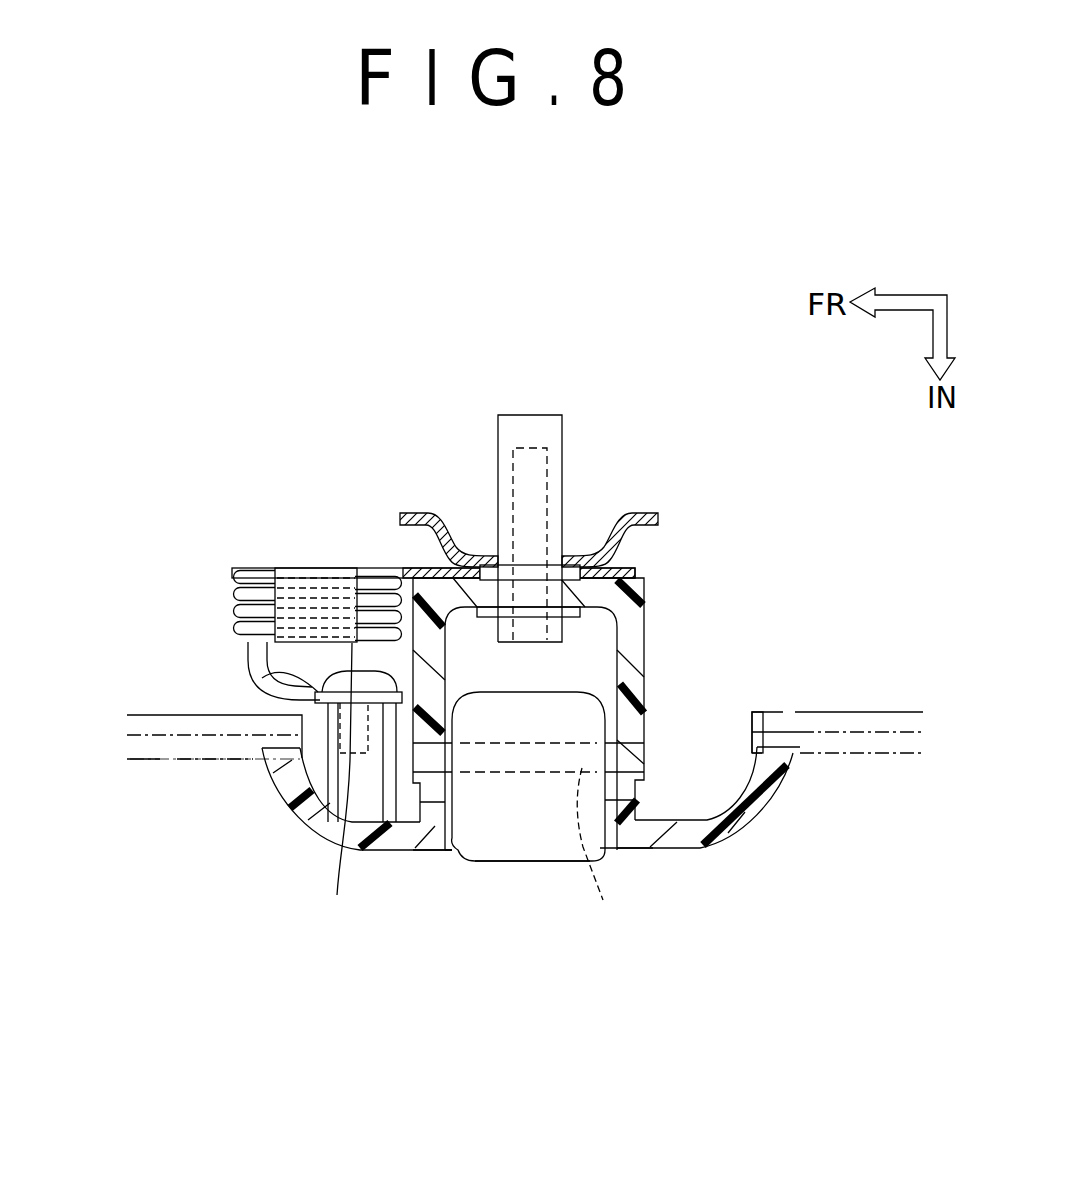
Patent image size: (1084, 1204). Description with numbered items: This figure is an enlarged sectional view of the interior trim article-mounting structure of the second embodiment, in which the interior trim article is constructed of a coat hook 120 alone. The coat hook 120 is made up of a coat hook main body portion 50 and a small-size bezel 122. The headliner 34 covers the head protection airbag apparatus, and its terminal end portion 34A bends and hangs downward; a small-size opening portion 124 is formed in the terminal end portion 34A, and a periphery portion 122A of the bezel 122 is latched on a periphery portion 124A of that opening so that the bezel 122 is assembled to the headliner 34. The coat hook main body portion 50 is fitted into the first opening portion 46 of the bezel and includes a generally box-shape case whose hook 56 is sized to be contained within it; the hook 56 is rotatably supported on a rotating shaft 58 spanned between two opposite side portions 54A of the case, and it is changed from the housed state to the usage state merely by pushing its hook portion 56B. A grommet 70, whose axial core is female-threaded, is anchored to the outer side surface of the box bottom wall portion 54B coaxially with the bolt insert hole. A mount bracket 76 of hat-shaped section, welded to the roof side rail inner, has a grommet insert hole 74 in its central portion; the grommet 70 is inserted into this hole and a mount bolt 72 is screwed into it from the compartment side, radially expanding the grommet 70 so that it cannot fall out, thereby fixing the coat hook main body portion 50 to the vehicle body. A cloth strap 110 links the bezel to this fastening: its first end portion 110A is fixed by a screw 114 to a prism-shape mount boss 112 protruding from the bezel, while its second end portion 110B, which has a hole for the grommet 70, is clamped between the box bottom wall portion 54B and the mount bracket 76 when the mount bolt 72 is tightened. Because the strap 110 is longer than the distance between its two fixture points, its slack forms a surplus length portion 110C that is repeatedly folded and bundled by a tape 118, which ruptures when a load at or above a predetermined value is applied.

The headliner 34 is at (165, 762).
The terminal end portion of the headliner 34A is at (198, 762).
The first opening portion 46 is at (463, 865).
The coat hook main body portion 50 is at (527, 878).
The side portions of the case 54A is at (640, 632).
The box bottom wall portion 54B is at (600, 553).
The hook 56 is at (571, 860).
The hook portion 56B is at (553, 842).
The rotating shaft 58 is at (600, 856).
The grommet 70 is at (532, 415).
The mount bolt 72 is at (532, 640).
The grommet insert hole 74 is at (512, 560).
The mount bracket 76 is at (420, 512).
The strap 110 is at (221, 554).
The first end portion of the strap 110A is at (342, 788).
The second end portion of the strap 110B is at (633, 565).
The surplus length portion 110C is at (230, 602).
The mount boss 112 is at (312, 822).
The screw 114 is at (248, 674).
The tape 118 is at (316, 556).
The coat hook 120 is at (480, 895).
The bezel 122 is at (755, 845).
The periphery portion of the bezel 122A is at (777, 762).
The small-size opening portion 124 is at (832, 673).
The periphery portion of the small-size opening portion 124A is at (763, 730).